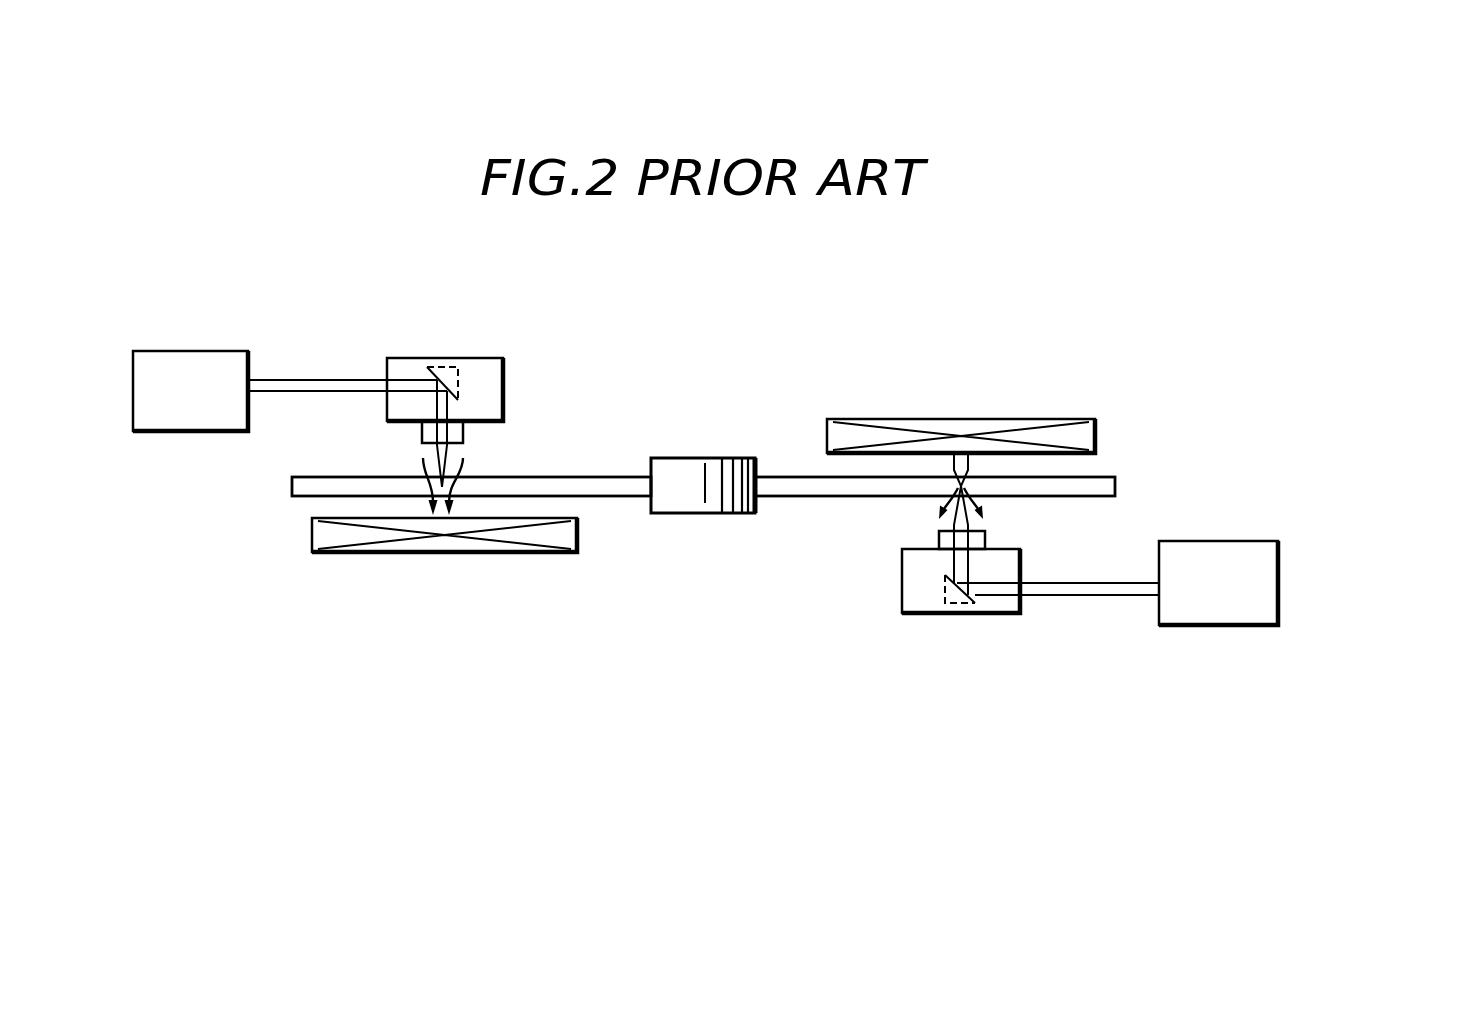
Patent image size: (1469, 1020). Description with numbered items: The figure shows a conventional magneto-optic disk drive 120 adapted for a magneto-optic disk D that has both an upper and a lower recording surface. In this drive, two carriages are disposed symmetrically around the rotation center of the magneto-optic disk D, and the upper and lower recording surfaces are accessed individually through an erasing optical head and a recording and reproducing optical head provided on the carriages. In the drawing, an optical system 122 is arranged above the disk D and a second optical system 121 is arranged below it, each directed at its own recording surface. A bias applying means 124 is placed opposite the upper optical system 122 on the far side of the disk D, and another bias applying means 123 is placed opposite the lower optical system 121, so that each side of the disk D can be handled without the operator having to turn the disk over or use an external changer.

The magneto-optic disk drive 120 is at (1298, 634).
The optical system 121 is at (1188, 612).
The optical system 122 is at (191, 362).
The bias applying means 123 is at (929, 425).
The bias applying means 124 is at (407, 543).
The magneto-optic disk D is at (1107, 478).